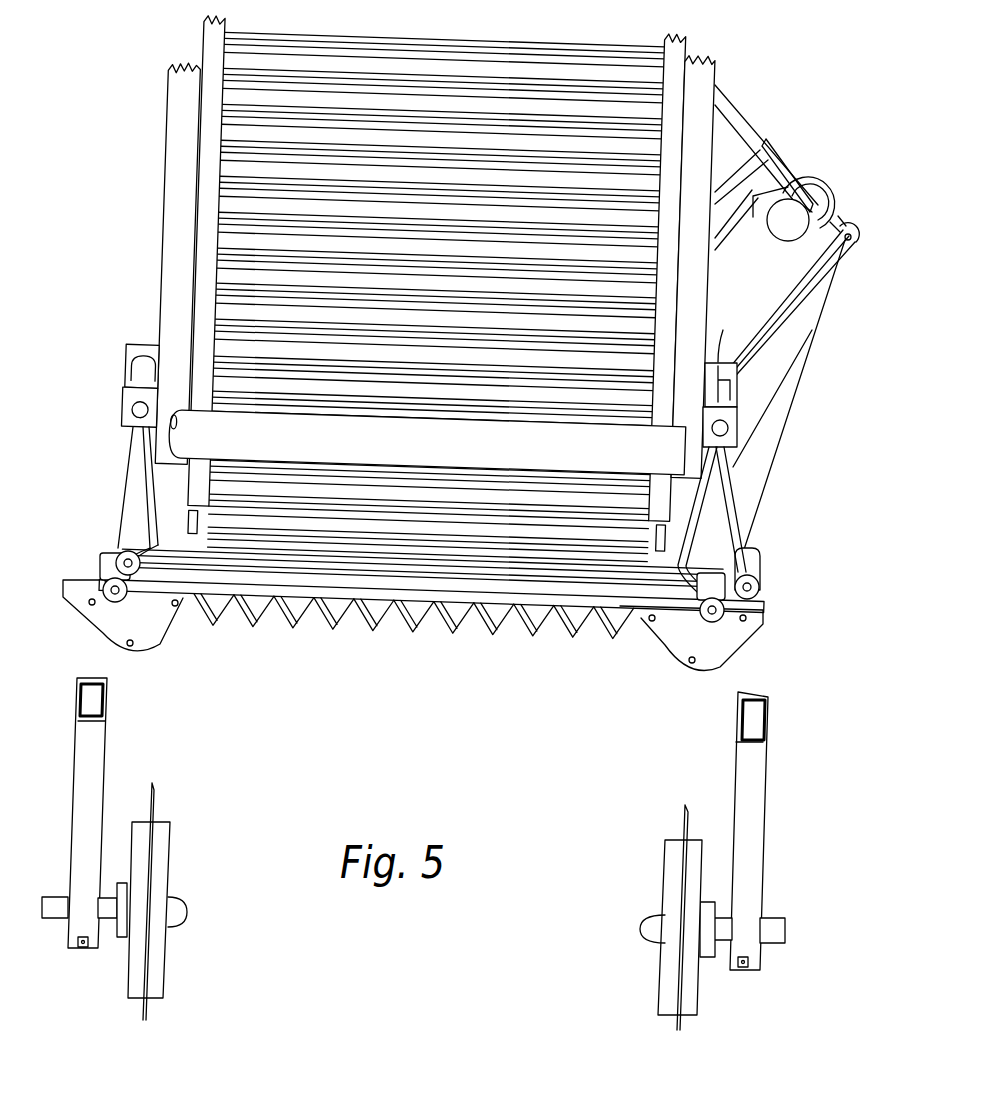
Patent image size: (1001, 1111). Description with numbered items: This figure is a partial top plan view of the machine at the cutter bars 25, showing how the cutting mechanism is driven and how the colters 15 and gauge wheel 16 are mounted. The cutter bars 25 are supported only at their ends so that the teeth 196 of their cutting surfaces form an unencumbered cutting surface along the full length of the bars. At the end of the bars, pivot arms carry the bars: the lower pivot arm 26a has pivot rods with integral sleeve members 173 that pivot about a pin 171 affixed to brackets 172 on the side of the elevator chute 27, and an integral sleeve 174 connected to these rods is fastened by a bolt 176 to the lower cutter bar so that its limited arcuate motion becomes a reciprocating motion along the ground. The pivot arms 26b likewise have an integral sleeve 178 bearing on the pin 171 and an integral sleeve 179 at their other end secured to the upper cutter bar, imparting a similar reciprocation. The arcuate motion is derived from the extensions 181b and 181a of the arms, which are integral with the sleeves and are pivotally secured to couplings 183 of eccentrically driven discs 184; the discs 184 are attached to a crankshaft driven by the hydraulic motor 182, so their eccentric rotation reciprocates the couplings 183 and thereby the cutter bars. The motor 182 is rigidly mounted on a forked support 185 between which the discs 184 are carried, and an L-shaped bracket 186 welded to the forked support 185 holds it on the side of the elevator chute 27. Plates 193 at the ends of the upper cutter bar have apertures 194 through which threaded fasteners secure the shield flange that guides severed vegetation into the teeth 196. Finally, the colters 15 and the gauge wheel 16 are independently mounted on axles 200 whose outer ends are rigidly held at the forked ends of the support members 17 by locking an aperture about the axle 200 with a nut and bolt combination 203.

The elevator chute 27 is at (700, 278).
The cutter bars 25 is at (305, 598).
The teeth 196 is at (532, 623).
The plates 193 is at (158, 635).
The apertures 194 is at (92, 602).
The extension 181a is at (787, 345).
The extension 181b is at (757, 475).
The couplings 183 is at (836, 234).
The integral sleeve 178 is at (727, 397).
The integral sleeve members 173 is at (714, 357).
The brackets 172 is at (733, 415).
The pin 171 is at (733, 433).
The integral sleeve 174 is at (758, 557).
The pivot arms 26b is at (697, 503).
The lower pivot arm 26a is at (740, 527).
The bolt 176 is at (750, 585).
The integral sleeve 179 is at (720, 598).
The L-shaped bracket 186 is at (737, 110).
The forked support 185 is at (783, 146).
The eccentrically driven discs 184 is at (817, 175).
The hydraulic motor 182 is at (782, 228).
The support members 17 is at (100, 732).
The axles 200 is at (52, 900).
The gauge wheel 16 is at (157, 982).
The colters 15 is at (157, 798).
The nut and bolt combination 203 is at (82, 947).